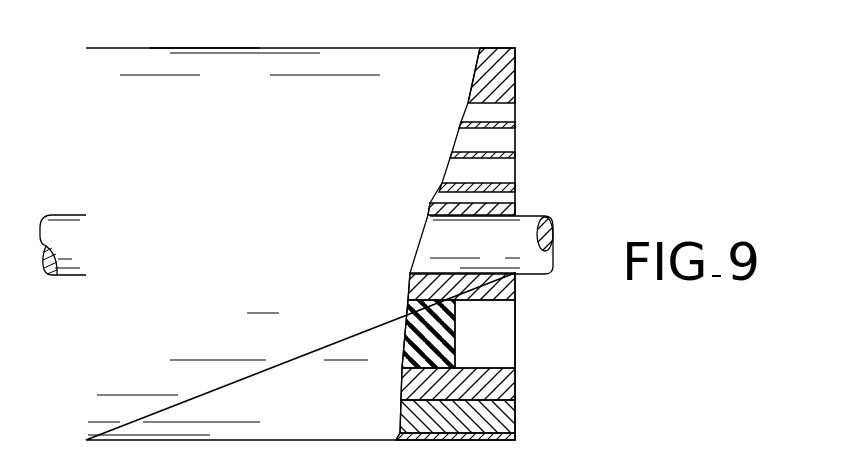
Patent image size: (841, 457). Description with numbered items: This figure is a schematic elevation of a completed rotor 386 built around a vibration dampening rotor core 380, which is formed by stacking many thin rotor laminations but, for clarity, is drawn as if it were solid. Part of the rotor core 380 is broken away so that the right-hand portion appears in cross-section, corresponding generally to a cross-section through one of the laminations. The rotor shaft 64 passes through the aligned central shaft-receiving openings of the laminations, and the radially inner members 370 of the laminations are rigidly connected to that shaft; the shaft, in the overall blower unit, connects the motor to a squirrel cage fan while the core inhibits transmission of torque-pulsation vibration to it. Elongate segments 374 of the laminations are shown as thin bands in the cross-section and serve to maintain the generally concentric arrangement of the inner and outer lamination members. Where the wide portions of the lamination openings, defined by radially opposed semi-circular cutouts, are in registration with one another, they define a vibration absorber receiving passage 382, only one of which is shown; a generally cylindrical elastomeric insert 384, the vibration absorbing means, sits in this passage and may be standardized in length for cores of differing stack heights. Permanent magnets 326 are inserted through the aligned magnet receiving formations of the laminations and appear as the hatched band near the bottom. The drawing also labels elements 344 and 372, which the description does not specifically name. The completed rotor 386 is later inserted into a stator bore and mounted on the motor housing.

The vibration dampening rotor core 380 is at (308, 47).
The completed rotor 386 is at (199, 45).
The upper sealing block 344 is at (517, 78).
The elongate segments 374 is at (517, 190).
The rotor shaft 64 is at (527, 218).
The radially inner members 370 is at (517, 290).
The vibration absorber receiving passages 382 is at (508, 318).
The elastomeric inserts 384 is at (455, 338).
The lower band 372 is at (517, 382).
The permanent magnets 326 is at (517, 417).